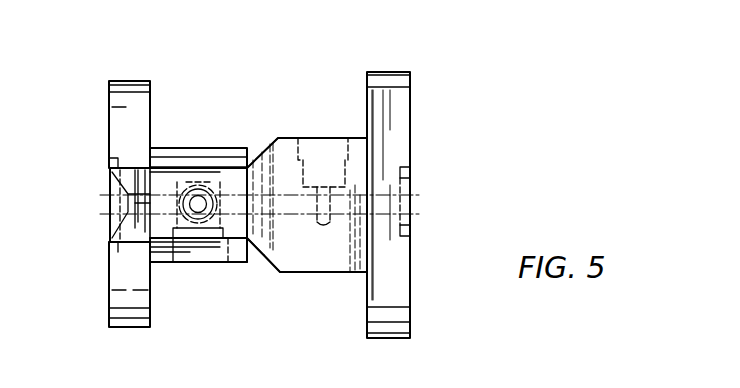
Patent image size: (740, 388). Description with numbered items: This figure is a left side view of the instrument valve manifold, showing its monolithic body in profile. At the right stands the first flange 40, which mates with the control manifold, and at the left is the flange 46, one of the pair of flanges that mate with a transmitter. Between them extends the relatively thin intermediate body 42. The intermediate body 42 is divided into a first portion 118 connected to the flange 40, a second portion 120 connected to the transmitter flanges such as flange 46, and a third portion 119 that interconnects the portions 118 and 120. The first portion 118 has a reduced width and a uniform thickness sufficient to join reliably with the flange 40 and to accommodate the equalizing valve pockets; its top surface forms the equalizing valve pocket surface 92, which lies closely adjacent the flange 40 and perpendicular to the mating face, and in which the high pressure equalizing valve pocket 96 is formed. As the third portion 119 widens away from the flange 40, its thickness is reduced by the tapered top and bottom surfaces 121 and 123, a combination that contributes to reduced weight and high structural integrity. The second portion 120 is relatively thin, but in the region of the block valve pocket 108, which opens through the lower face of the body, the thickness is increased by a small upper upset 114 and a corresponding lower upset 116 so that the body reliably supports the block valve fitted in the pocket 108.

The first flange 40 is at (398, 120).
The intermediate body 42 is at (278, 137).
The flange 46 is at (118, 120).
The equalizing valve pocket surface 92 is at (293, 137).
The high pressure equalizing valve pocket 96 is at (300, 158).
The block valve pocket 108 is at (185, 246).
The upper upset 114 is at (215, 160).
The lower upset 116 is at (162, 264).
The first portion 118 is at (330, 257).
The third portion 119 is at (273, 248).
The second portion 120 is at (162, 182).
The tapered top surface 121 is at (267, 148).
The tapered bottom surface 123 is at (275, 270).